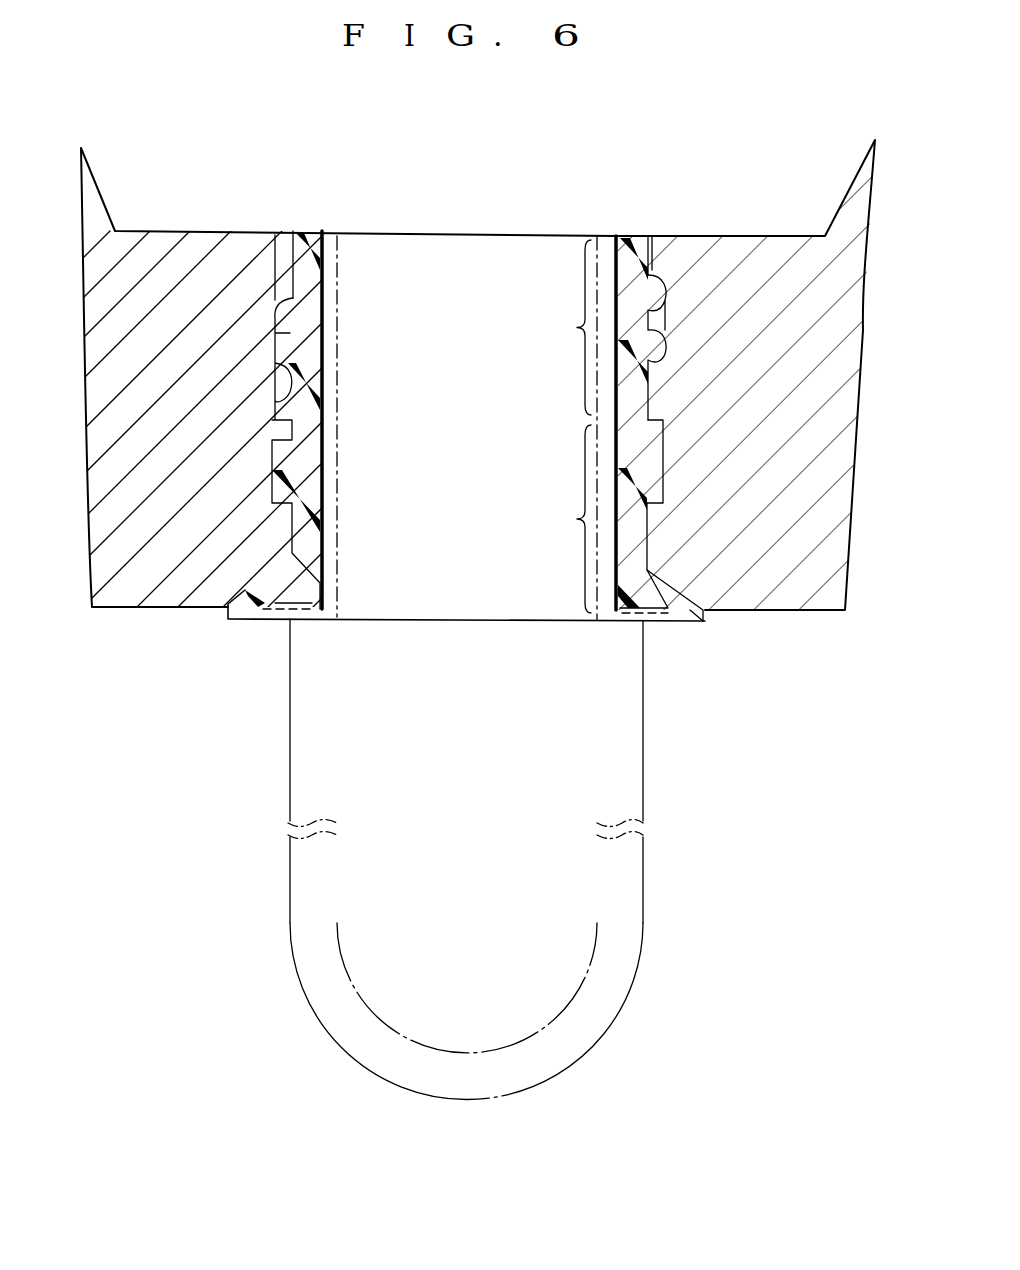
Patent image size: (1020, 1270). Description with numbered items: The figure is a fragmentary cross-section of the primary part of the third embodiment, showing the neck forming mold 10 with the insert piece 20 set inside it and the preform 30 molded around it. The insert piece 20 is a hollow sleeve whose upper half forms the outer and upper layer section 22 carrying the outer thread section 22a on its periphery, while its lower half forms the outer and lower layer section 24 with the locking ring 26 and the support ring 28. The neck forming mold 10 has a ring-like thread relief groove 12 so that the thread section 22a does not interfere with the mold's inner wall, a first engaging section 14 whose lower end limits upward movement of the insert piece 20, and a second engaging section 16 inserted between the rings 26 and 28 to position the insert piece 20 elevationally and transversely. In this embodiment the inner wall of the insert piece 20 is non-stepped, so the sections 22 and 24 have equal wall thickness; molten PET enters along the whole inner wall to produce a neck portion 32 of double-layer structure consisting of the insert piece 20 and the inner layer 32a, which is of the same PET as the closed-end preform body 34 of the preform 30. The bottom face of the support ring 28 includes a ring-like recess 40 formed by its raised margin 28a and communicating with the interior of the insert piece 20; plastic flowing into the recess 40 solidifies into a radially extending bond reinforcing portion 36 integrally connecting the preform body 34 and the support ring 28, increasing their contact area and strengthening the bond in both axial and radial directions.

The neck forming mold 10 is at (213, 226).
The thread relief groove 12 is at (280, 350).
The first engaging section 14 is at (703, 245).
The second engaging section 16 is at (650, 527).
The insert piece 20 is at (224, 620).
The outer and upper layer section 22 is at (567, 341).
The outer thread section 22a is at (665, 297).
The outer and lower layer section 24 is at (567, 533).
The locking ring 26 is at (665, 430).
The support ring 28 is at (680, 606).
The raised margin 28a is at (690, 618).
The preform 30 is at (654, 798).
The neck portion 32 is at (328, 398).
The inner layer 32a is at (328, 480).
The preform body 34 is at (318, 778).
The bond reinforcing portion 36 is at (270, 608).
The recess 40 is at (660, 622).